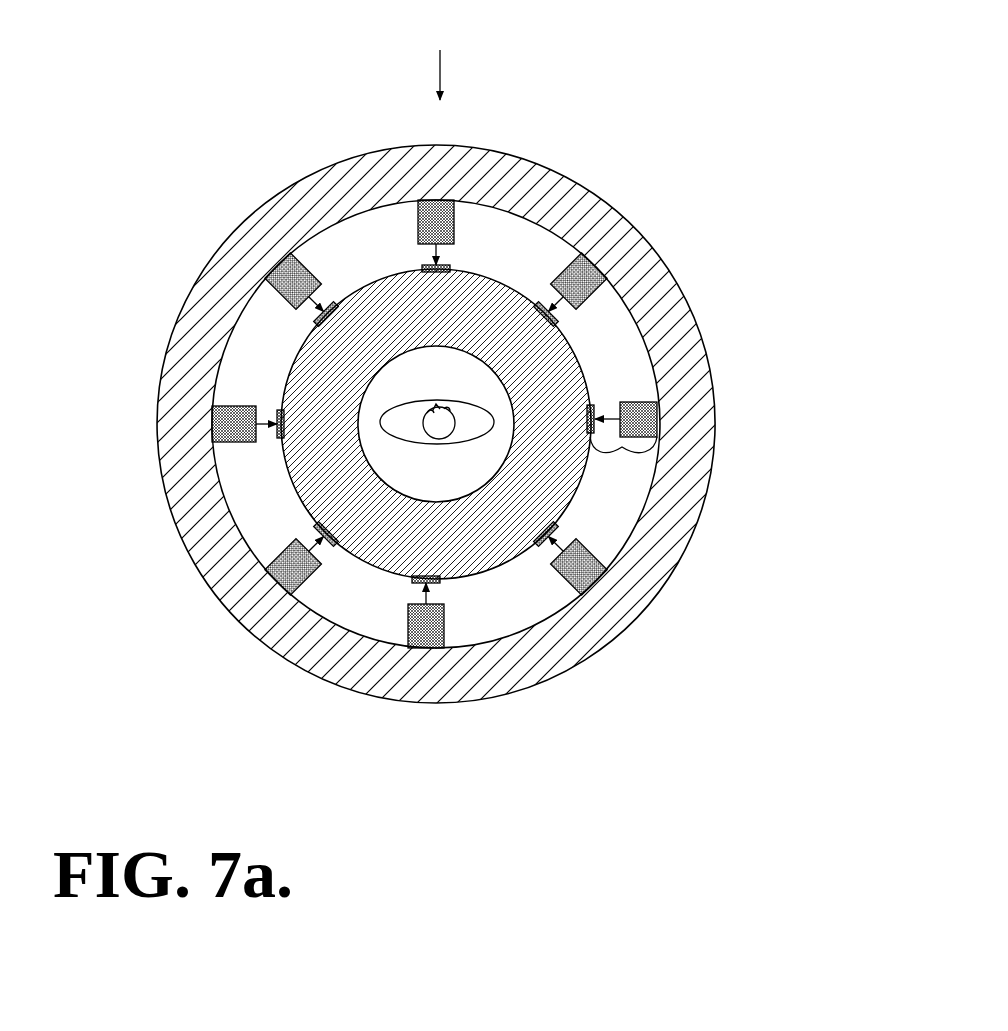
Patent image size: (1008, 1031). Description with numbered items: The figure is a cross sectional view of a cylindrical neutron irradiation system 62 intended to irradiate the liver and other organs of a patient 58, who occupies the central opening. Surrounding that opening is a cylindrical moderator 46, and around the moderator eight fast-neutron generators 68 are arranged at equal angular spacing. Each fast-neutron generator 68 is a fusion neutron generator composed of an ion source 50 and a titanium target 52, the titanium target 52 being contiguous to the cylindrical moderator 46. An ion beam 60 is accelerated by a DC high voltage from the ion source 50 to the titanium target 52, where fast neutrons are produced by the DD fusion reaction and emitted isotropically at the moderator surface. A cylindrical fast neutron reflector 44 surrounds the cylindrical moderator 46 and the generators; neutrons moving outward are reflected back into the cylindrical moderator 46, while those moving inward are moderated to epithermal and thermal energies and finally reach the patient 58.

The cylindrical fast neutron reflector 44 is at (605, 222).
The cylindrical moderator 46 is at (536, 486).
The ion source 50 is at (657, 401).
The titanium target 52 is at (593, 406).
The patient 58 is at (400, 425).
The ion beam 60 is at (432, 594).
The cylindrical neutron irradiation system 62 is at (442, 56).
The fast-neutron generator 68 is at (735, 371).